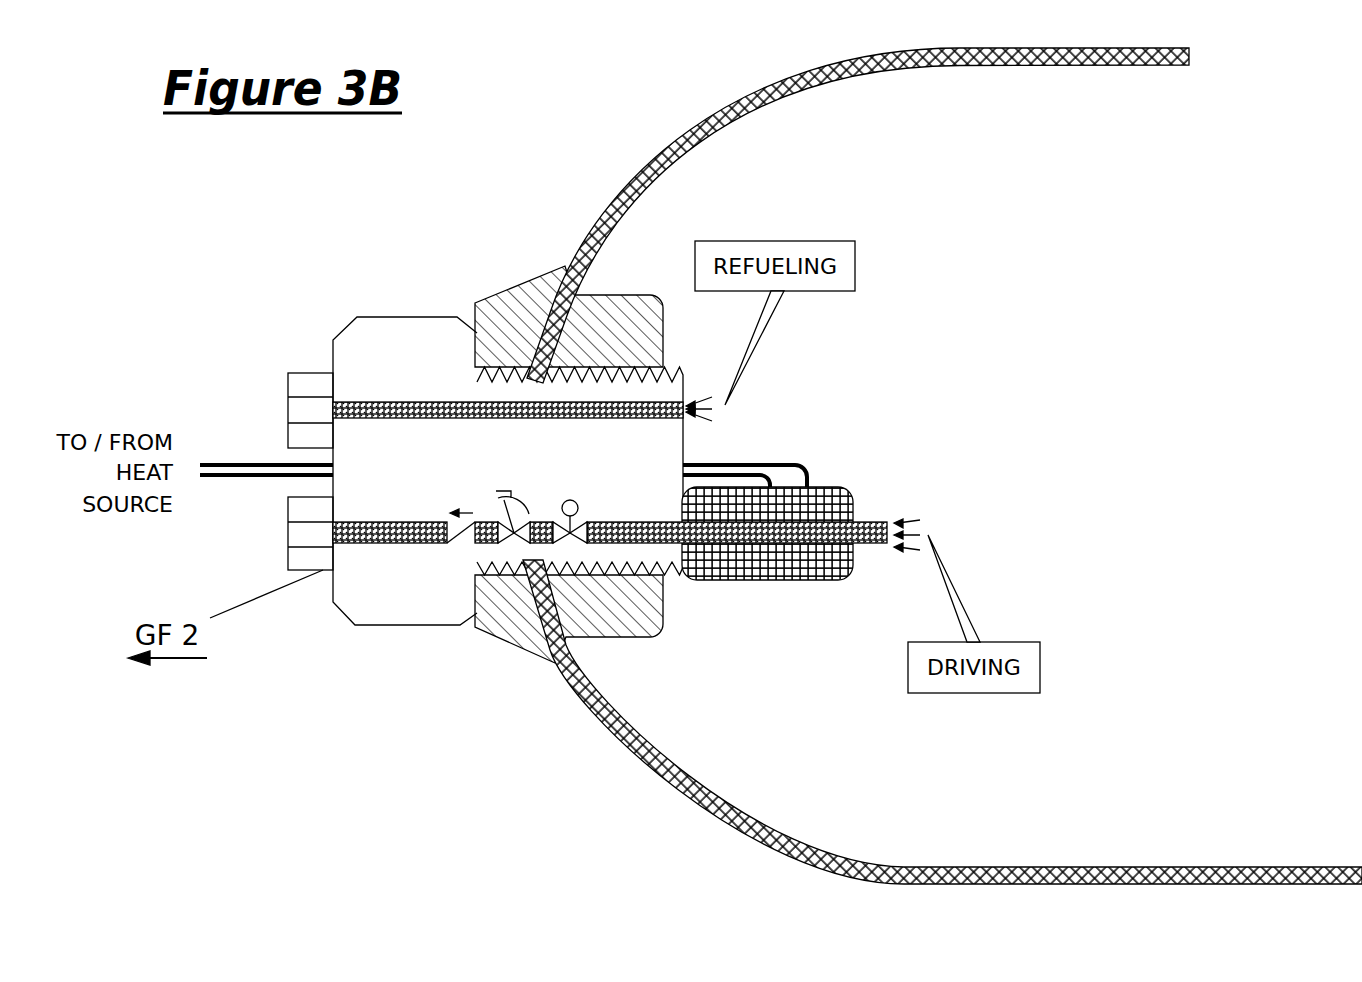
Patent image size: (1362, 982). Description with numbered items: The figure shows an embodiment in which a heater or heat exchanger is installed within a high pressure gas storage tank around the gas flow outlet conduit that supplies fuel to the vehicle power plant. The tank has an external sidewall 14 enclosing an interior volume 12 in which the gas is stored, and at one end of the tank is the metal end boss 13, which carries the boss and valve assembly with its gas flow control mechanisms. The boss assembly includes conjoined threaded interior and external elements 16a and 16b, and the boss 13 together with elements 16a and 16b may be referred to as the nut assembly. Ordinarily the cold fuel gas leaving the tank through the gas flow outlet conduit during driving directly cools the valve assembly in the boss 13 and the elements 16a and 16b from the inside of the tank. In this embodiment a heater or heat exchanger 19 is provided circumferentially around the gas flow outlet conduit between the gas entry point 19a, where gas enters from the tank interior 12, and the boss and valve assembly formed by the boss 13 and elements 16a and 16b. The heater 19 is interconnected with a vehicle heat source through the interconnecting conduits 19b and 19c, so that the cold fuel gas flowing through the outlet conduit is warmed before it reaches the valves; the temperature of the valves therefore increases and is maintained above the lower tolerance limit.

The interior volume 12 is at (932, 221).
The end boss 13 is at (398, 626).
The external sidewall 14 is at (725, 111).
The threaded interior element 16a is at (567, 680).
The threaded external element 16b is at (517, 290).
The heater or heat exchanger 19 is at (769, 581).
The gas entry point 19a is at (960, 535).
The interconnecting conduit 19b is at (768, 465).
The interconnecting conduit 19c is at (813, 470).